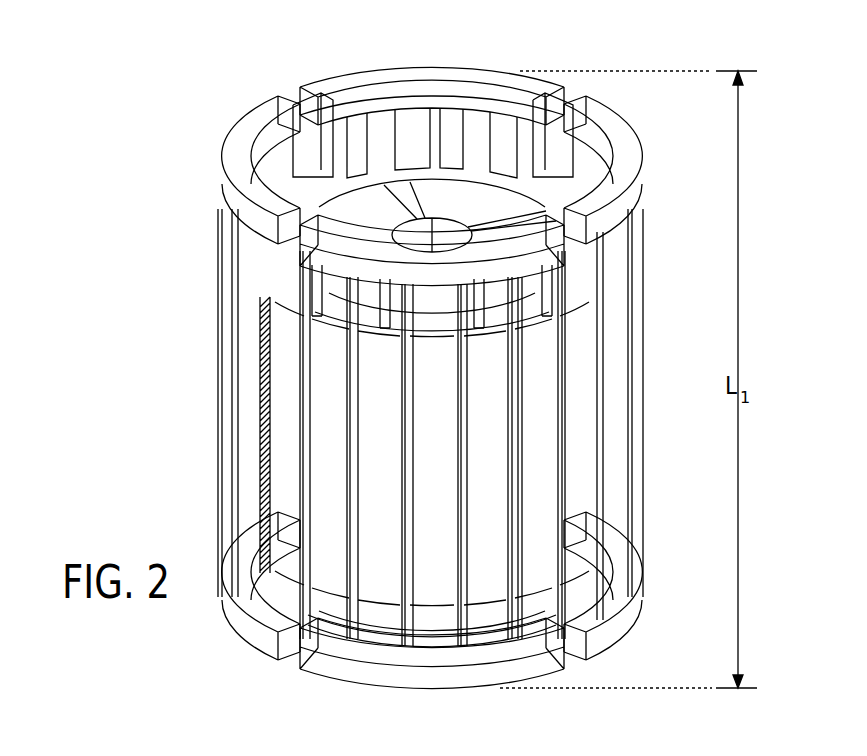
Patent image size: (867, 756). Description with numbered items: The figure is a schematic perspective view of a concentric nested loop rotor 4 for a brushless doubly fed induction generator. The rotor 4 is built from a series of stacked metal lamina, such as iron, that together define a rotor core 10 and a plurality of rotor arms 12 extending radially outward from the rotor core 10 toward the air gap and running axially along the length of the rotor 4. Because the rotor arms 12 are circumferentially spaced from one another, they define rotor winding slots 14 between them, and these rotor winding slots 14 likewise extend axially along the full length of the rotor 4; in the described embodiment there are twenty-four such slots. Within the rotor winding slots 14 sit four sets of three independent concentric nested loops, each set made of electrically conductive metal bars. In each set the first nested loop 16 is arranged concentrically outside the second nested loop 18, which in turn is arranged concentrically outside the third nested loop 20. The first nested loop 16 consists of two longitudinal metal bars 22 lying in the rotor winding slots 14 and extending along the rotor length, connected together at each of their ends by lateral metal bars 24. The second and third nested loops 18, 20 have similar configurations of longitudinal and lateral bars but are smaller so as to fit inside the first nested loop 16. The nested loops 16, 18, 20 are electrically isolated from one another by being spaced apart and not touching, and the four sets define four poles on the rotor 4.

The rotor 4 is at (168, 193).
The rotor core 10 is at (418, 190).
The rotor arms 12 is at (300, 300).
The rotor winding slots 14 is at (326, 100).
The first nested loop 16 is at (478, 88).
The second nested loop 18 is at (382, 120).
The third nested loop 20 is at (430, 150).
The longitudinal metal bars 22 is at (594, 612).
The lateral metal bars 24 is at (620, 317).